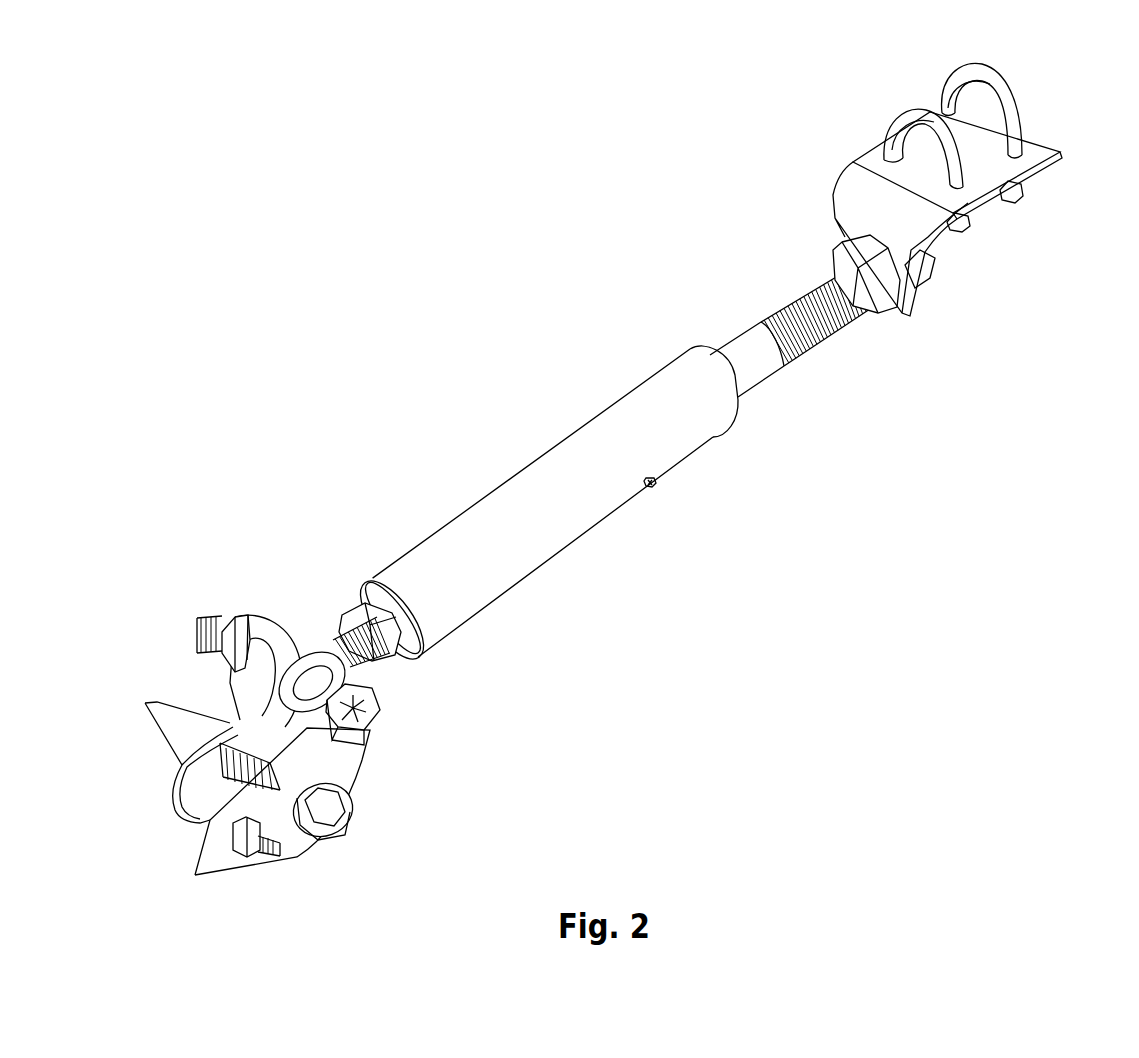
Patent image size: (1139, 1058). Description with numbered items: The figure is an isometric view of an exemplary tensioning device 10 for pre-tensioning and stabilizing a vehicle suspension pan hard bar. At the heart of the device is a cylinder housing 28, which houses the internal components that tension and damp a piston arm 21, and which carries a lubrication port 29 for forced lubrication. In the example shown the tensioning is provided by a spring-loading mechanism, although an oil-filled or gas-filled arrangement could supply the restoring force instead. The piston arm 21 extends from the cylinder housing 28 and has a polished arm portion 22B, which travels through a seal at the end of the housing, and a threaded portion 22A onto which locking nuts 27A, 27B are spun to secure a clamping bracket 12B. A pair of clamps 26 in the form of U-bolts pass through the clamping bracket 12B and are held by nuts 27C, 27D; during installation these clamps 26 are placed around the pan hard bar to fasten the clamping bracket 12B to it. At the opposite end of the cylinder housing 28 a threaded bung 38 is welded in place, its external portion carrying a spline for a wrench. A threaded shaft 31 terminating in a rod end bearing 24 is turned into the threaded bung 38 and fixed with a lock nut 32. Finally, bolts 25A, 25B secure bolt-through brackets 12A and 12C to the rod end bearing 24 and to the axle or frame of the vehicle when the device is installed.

The tensioning device 10 is at (781, 461).
The piston arm 21 is at (789, 256).
The bolt-through bracket 12A is at (227, 873).
The clamping bracket 12B is at (1055, 152).
The bolt-through bracket 12C is at (175, 807).
The threaded portion 22A is at (833, 325).
The polished arm portion 22B is at (733, 337).
The rod end bearing 24 is at (302, 650).
The bolt 25A is at (365, 715).
The bolt 25B is at (347, 833).
The clamps 26 is at (972, 82).
The locking nut 27A is at (887, 300).
The locking nut 27B is at (920, 280).
The nut 27C is at (967, 227).
The nut 27D is at (1017, 200).
The cylinder housing 28 is at (515, 475).
The lubrication port 29 is at (652, 493).
The threaded shaft 31 is at (362, 660).
The lock nut 32 is at (397, 657).
The threaded bung 38 is at (367, 583).